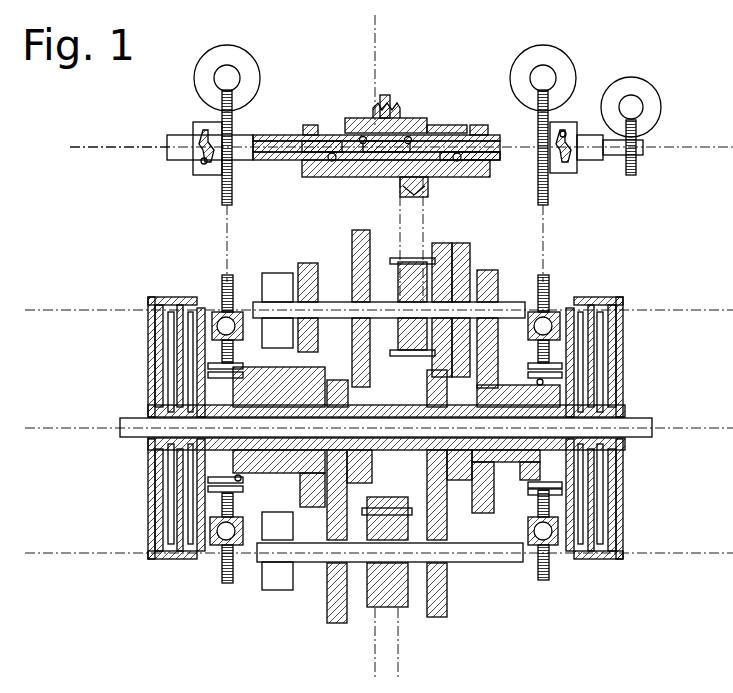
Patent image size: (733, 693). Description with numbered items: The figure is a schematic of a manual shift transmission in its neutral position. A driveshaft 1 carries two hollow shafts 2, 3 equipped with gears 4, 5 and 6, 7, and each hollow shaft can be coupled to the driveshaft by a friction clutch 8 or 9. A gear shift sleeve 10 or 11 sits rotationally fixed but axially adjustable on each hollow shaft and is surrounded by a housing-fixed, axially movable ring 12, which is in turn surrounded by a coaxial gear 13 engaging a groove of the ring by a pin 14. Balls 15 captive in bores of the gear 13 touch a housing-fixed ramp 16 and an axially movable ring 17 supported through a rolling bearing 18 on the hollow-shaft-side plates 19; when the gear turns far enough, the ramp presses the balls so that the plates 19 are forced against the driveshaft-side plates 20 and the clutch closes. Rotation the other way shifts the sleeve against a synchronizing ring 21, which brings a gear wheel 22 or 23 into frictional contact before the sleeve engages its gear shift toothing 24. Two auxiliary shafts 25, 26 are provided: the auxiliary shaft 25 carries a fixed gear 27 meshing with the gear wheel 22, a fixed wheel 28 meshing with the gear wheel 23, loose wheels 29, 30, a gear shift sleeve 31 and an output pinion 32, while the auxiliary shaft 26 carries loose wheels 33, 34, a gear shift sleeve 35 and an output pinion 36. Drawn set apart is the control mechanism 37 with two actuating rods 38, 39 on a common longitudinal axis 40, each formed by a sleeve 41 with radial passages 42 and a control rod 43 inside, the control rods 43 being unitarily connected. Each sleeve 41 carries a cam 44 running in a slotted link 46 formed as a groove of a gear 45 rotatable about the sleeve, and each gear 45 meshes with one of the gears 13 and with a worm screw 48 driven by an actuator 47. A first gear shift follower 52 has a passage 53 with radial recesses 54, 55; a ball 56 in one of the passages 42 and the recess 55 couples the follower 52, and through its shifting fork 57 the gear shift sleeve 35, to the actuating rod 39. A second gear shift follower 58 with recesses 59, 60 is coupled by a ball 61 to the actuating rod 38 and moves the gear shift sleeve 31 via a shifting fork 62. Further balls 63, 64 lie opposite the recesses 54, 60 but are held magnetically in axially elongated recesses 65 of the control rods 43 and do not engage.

The driveshaft 1 is at (130, 420).
The hollow shaft 2 is at (272, 397).
The hollow shaft 3 is at (504, 468).
The gear 4 is at (337, 385).
The gear 5 is at (360, 460).
The gear 6 is at (432, 390).
The gear 7 is at (460, 480).
The friction clutch 8 is at (157, 292).
The friction clutch 9 is at (612, 296).
The gear shift sleeve 10 is at (200, 380).
The gear shift sleeve 11 is at (575, 385).
The ring 12 is at (215, 482).
The gear 13 is at (226, 290).
The pin 14 is at (592, 340).
The balls 15 is at (222, 320).
The ramp 16 is at (236, 312).
The axially moveable ring 17 is at (222, 545).
The rolling bearing 18 is at (165, 322).
The plates 19 is at (171, 352).
The plates 20 is at (185, 470).
The synchronizing ring 21 is at (247, 358).
The gear wheel 22 is at (312, 507).
The gear wheel 23 is at (490, 330).
The gear shift toothing 24 is at (538, 380).
The auxiliary shaft 25 is at (492, 290).
The auxiliary shaft 26 is at (480, 562).
The fixed gear 27 is at (308, 265).
The fixed wheel 28 is at (462, 260).
The loose wheel 29 is at (355, 260).
The loose wheel 30 is at (442, 260).
The gear shift sleeve 31 is at (405, 270).
The output pinion 32 is at (270, 290).
The loose wheel 33 is at (335, 623).
The loose wheel 34 is at (441, 617).
The gear shift sleeve 35 is at (385, 500).
The output pinion 36 is at (282, 590).
The control mechanism 37 is at (108, 132).
The actuating rod 38 is at (293, 108).
The actuating rod 39 is at (503, 110).
The longitudinal axis 40 is at (105, 148).
The sleeve 41 is at (270, 135).
The radial passages 42 is at (350, 120).
The control rod 43 is at (268, 158).
The cam 44 is at (205, 145).
The gear 45 is at (222, 185).
The slotted link 46 is at (197, 170).
The actuator 47 is at (206, 71).
The worm screw 48 is at (233, 75).
The first gear shift follower 52 is at (440, 125).
The passage 53 is at (390, 110).
The radial recess 54 is at (376, 104).
The radial recess 55 is at (409, 136).
The ball 56 is at (415, 142).
The shifting fork 57 is at (375, 62).
The second gear shift follower 58 is at (368, 177).
The recess 59 is at (332, 162).
The recess 60 is at (460, 162).
The ball 61 is at (312, 160).
The shifting fork 62 is at (410, 198).
The ball 63 is at (361, 136).
The ball 64 is at (482, 160).
The axially elongated recesses 65 is at (306, 125).